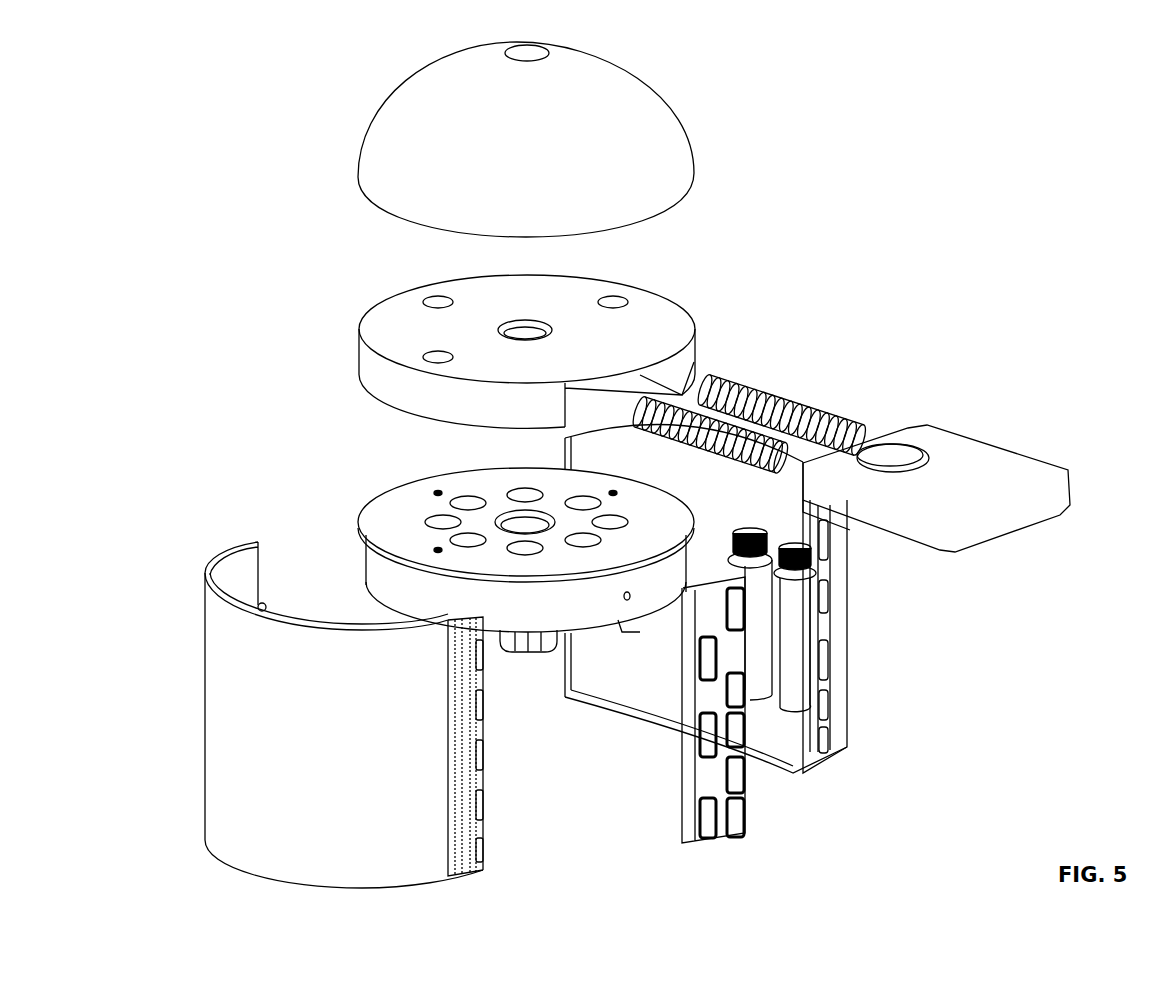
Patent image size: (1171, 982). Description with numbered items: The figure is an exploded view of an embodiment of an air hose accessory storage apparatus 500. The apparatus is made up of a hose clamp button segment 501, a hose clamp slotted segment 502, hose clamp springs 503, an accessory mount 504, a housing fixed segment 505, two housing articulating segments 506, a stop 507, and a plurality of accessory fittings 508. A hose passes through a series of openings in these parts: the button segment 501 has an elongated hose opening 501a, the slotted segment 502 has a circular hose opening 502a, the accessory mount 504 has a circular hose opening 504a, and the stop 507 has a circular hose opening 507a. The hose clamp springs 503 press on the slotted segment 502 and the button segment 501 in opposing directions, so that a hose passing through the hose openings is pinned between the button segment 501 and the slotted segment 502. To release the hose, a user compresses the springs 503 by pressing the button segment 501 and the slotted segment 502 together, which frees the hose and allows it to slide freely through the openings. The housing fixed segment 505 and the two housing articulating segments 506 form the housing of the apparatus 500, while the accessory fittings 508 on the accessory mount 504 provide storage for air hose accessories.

The air hose accessory storage apparatus 500 is at (112, 95).
The hose clamp button segment 501 is at (996, 509).
The elongated hose opening 501a is at (927, 448).
The hose clamp slotted segment 502 is at (621, 359).
The circular hose opening 502a is at (556, 331).
The hose clamp springs 503 is at (793, 398).
The accessory mount 504 is at (546, 611).
The circular hose opening 504a is at (508, 515).
The housing fixed segment 505 is at (722, 846).
The housing articulating segments 506 is at (331, 758).
The stop 507 is at (548, 160).
The circular hose opening 507a is at (513, 60).
The accessory fittings 508 is at (528, 676).